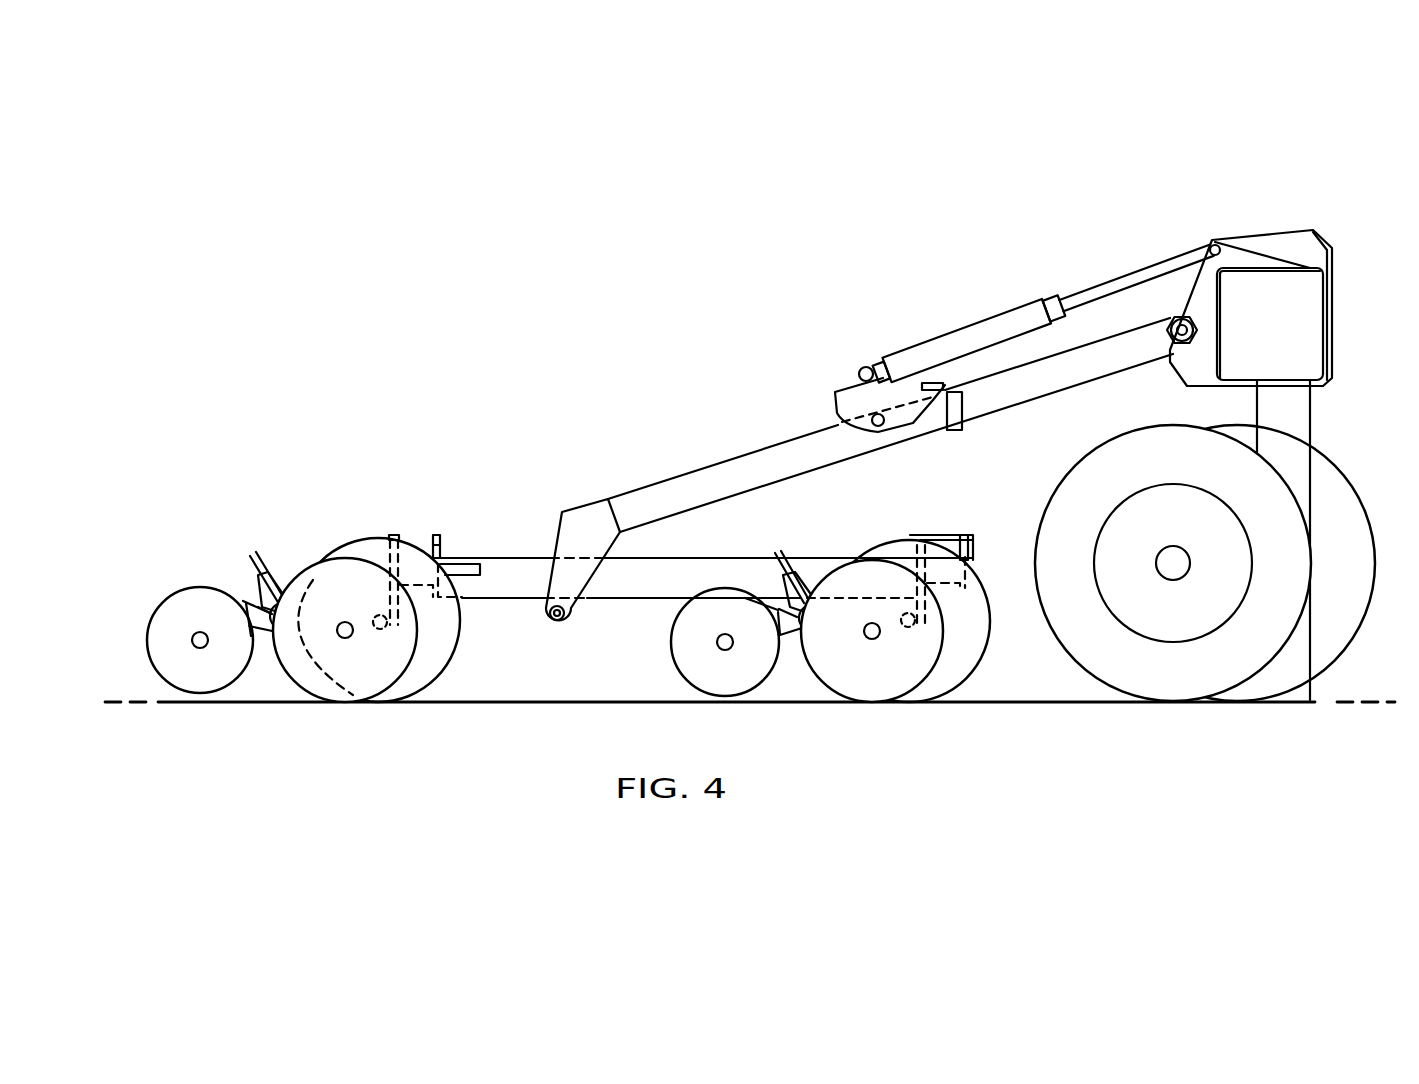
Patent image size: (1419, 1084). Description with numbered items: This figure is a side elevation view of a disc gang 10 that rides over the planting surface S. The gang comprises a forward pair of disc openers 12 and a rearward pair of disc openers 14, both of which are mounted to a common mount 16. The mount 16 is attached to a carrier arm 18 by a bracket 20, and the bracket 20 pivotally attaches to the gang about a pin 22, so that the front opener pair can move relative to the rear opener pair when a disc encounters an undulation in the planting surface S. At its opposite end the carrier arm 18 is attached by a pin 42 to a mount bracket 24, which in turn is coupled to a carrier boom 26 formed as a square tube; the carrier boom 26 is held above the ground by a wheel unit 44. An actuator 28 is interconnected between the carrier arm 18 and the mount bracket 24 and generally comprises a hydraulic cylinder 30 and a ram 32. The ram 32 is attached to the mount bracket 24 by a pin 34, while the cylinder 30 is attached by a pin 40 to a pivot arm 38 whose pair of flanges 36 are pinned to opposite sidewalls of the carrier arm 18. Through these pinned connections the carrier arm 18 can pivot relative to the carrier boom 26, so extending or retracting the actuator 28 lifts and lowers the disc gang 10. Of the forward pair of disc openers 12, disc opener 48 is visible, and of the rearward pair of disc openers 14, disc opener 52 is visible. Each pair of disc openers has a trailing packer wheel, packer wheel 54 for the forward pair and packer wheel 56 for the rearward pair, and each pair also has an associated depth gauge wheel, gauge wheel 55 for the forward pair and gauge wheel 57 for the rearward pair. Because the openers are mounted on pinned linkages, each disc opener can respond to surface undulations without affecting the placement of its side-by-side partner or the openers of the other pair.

The disc gang 10 is at (744, 478).
The forward pair of disc openers 12 is at (824, 670).
The rearward pair of disc openers 14 is at (304, 645).
The mount 16 is at (517, 563).
The carrier arm 18 is at (1007, 403).
The bracket 20 is at (585, 512).
The pin 22 is at (565, 622).
The mount bracket 24 is at (1247, 253).
The carrier boom 26 is at (1310, 322).
The actuator 28 is at (1054, 260).
The hydraulic cylinder 30 is at (972, 333).
The ram 32 is at (1120, 283).
The pin 34 is at (1213, 243).
The flanges 36 is at (862, 422).
The pivot arm 38 is at (850, 380).
The pin 40 is at (863, 368).
The pin 42 is at (1167, 331).
The wheel unit 44 is at (1263, 607).
The disc opener 48 is at (916, 646).
The disc opener 52 is at (398, 645).
The trailing packer wheel 54 is at (678, 652).
The depth gauge wheel 55 is at (838, 677).
The trailing packer wheel 56 is at (152, 646).
The depth gauge wheel 57 is at (310, 688).
The planting surface S is at (1078, 703).